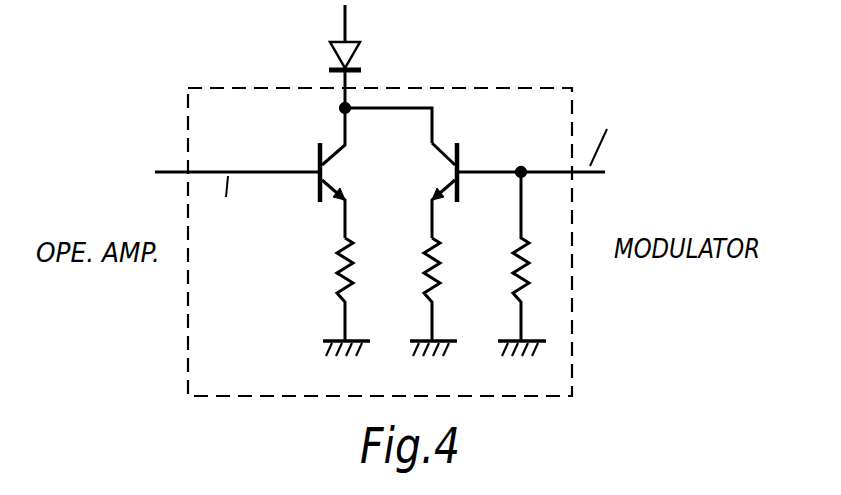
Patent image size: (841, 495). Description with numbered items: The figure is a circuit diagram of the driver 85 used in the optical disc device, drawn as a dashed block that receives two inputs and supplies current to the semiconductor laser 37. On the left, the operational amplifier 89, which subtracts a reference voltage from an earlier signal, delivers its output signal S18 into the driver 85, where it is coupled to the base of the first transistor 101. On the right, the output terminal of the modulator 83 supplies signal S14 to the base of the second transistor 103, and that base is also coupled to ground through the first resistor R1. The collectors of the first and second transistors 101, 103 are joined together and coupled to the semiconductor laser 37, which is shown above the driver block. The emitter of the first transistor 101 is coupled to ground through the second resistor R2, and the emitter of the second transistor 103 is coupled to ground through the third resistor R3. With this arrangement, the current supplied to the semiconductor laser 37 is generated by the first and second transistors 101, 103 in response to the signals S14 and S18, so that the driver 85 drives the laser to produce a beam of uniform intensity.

The semiconductor laser 37 is at (356, 51).
The driver 85 is at (185, 147).
The operational amplifier 89 is at (168, 177).
The first transistor 101 is at (312, 161).
The second transistor 103 is at (466, 161).
The modulator 83 is at (593, 176).
The signal S18 is at (234, 207).
The signal S14 is at (616, 132).
The first resistor R1 is at (513, 264).
The second resistor R2 is at (423, 297).
The third resistor R3 is at (336, 297).